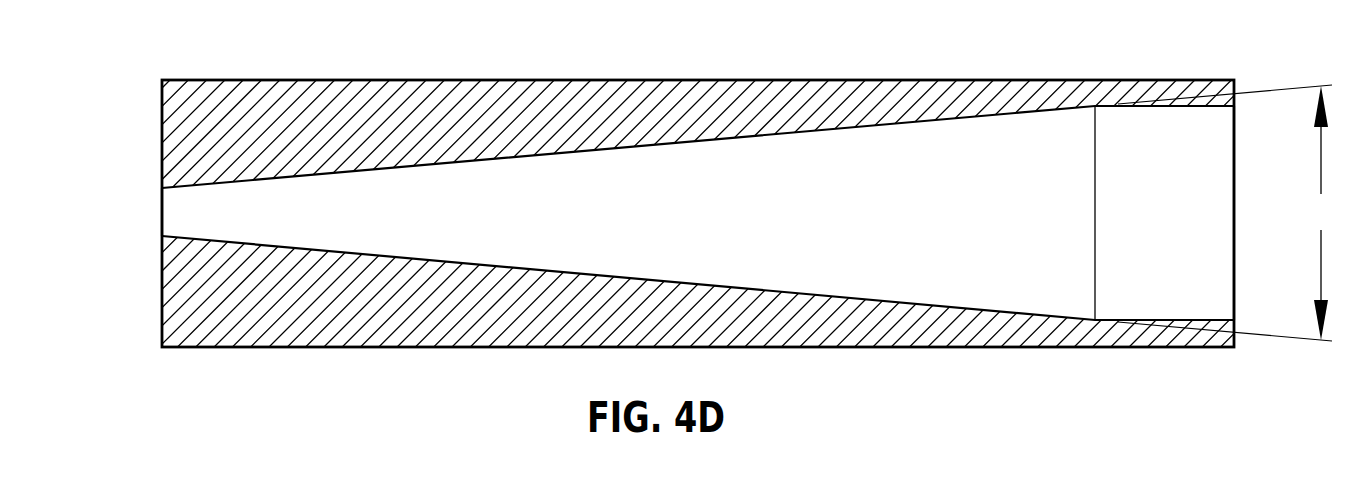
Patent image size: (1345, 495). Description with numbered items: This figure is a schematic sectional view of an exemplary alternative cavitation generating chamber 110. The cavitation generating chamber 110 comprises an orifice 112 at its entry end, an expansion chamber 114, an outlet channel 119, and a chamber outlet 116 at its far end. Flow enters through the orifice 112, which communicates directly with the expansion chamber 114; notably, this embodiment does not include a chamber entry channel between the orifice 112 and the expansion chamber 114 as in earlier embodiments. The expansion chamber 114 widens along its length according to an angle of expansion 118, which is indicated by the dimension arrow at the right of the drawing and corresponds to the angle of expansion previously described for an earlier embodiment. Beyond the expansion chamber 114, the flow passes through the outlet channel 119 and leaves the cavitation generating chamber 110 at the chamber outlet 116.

The cavitation generating chamber 110 is at (212, 56).
The orifice 112 is at (162, 213).
The expansion chamber 114 is at (667, 279).
The chamber outlet 116 is at (1234, 153).
The angle of expansion 118 is at (1228, 213).
The outlet channel 119 is at (1191, 320).